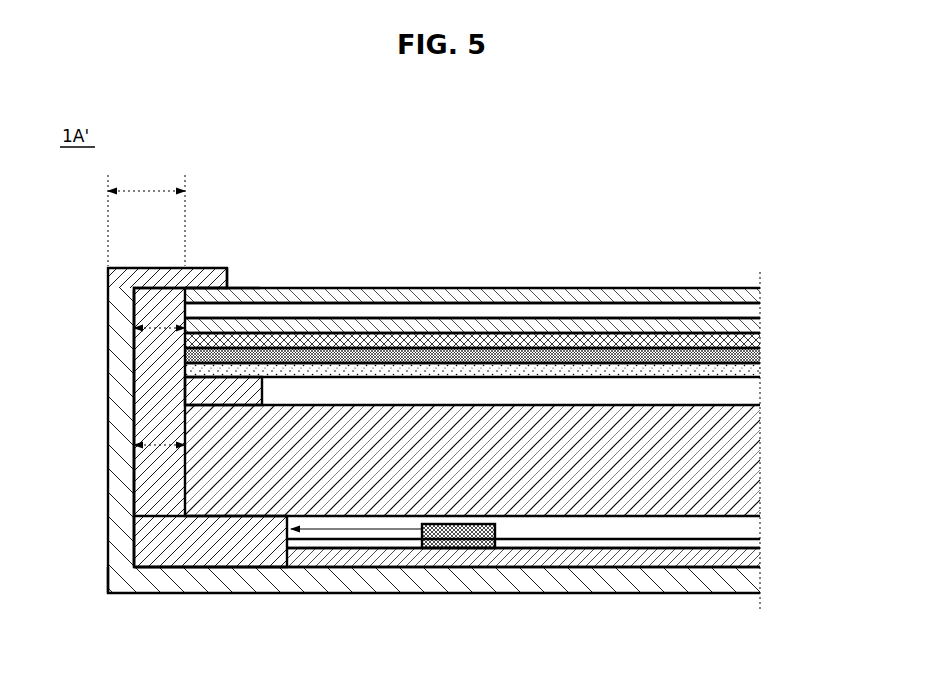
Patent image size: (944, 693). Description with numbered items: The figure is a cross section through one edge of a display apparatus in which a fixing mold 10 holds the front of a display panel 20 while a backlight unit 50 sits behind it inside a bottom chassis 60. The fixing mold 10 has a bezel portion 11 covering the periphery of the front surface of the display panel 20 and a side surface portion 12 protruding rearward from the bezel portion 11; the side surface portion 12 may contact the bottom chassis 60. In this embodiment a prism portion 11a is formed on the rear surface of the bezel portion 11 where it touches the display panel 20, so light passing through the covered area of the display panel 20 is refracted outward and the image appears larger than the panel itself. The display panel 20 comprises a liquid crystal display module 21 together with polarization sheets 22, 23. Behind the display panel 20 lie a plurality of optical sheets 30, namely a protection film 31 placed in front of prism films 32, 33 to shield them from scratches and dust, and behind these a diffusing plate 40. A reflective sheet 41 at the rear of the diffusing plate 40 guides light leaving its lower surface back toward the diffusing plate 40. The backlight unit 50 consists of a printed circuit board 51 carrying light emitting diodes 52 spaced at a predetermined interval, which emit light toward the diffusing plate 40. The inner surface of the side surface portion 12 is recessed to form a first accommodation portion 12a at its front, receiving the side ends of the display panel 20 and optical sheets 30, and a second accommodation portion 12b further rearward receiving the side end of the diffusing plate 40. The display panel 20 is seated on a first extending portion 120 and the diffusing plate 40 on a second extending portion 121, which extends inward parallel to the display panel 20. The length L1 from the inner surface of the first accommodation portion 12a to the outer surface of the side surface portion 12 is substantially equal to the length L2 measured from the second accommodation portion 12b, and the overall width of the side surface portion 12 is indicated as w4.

The fixing mold 10 is at (92, 262).
The bezel portion 11 is at (108, 277).
The prism portion 11a is at (227, 292).
The side surface portion 12 is at (134, 372).
The first accommodation portion 12a is at (192, 290).
The second accommodation portion 12b is at (197, 460).
The first extending portion 120 is at (263, 388).
The second extending portion 121 is at (175, 562).
The display panel 20 is at (640, 234).
The liquid crystal display module 21 is at (520, 300).
The polarization sheet 22 is at (632, 296).
The polarization sheet 23 is at (575, 318).
The optical sheets 30 is at (826, 330).
The protection film 31 is at (762, 337).
The prism film 32 is at (762, 355).
The prism film 33 is at (762, 371).
The diffusing plate 40 is at (740, 470).
The reflective sheet 41 is at (760, 540).
The backlight unit 50 is at (540, 643).
The printed circuit board 51 is at (545, 560).
The light emitting diode 52 is at (462, 548).
The bottom chassis 60 is at (750, 582).
The length L1 is at (159, 318).
The length L2 is at (159, 433).
The width w4 is at (146, 216).